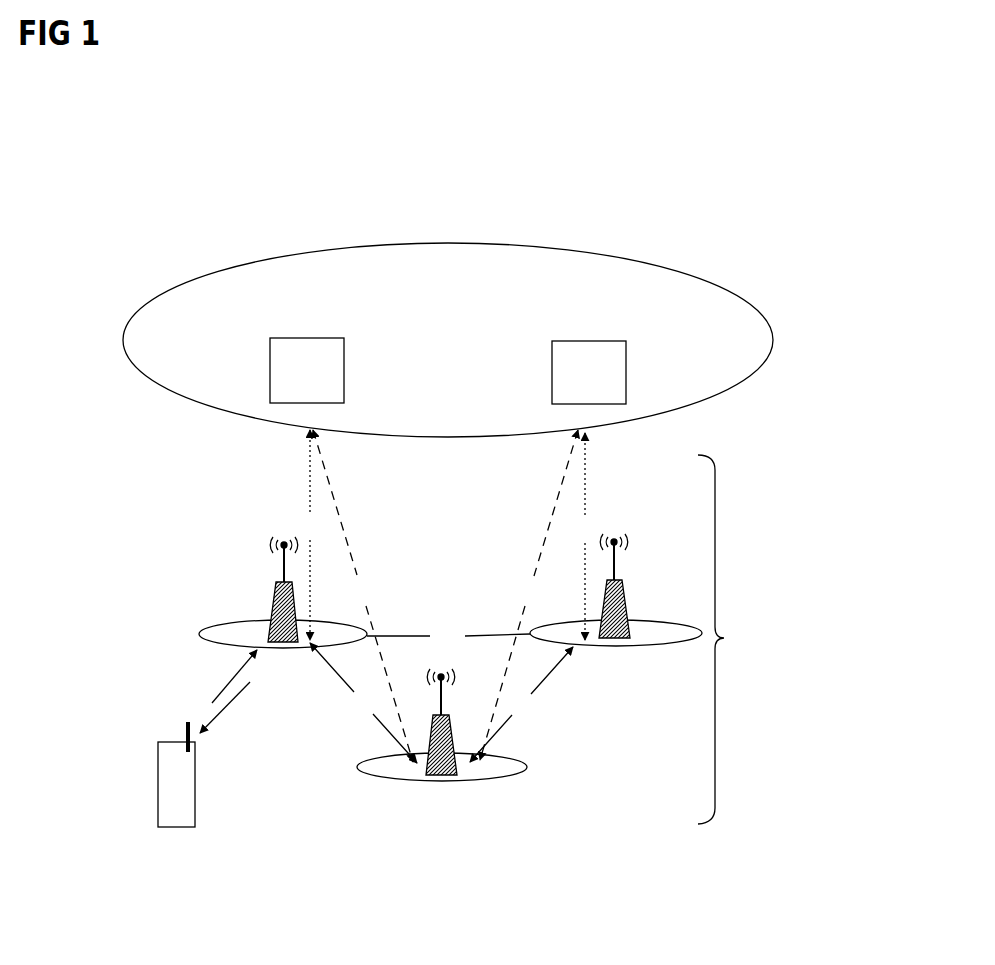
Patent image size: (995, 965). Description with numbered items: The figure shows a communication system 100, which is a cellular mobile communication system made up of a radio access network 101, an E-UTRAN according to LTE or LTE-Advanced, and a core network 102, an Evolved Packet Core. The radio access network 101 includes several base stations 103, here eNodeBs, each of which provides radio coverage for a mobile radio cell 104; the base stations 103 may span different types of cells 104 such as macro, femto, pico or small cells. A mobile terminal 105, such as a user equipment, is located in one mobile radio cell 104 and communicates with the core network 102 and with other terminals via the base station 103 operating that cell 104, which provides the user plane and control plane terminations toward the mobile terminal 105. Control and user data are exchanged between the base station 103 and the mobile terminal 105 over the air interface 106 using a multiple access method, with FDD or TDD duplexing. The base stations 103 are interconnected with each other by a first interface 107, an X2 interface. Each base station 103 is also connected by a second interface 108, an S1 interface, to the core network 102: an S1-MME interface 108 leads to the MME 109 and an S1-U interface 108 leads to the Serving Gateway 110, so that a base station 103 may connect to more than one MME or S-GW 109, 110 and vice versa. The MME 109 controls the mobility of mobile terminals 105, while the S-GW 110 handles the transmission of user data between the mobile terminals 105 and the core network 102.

The communication system 100 is at (748, 178).
The radio access network 101 is at (808, 617).
The core network 102 is at (762, 318).
The base station 103 is at (272, 592).
The mobile radio cell 104 is at (213, 637).
The mobile terminal 105 is at (178, 828).
The air interface 106 is at (243, 702).
The first interface 107 is at (450, 625).
The second interface 108 is at (309, 480).
The MME 109 is at (306, 338).
The Serving Gateway 110 is at (589, 341).